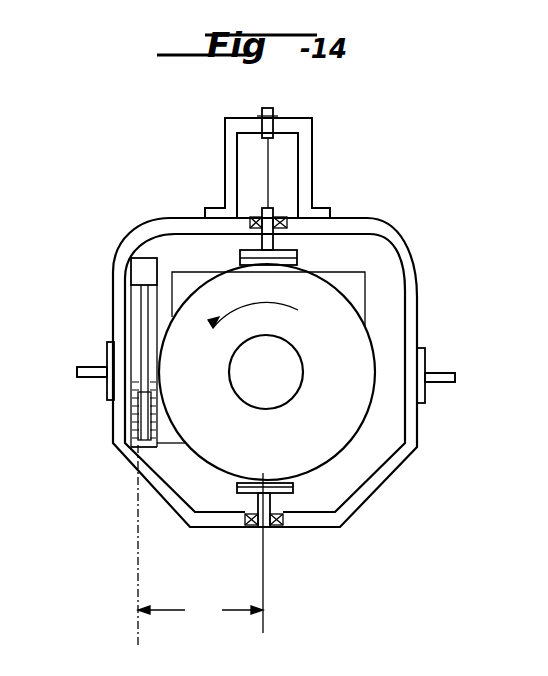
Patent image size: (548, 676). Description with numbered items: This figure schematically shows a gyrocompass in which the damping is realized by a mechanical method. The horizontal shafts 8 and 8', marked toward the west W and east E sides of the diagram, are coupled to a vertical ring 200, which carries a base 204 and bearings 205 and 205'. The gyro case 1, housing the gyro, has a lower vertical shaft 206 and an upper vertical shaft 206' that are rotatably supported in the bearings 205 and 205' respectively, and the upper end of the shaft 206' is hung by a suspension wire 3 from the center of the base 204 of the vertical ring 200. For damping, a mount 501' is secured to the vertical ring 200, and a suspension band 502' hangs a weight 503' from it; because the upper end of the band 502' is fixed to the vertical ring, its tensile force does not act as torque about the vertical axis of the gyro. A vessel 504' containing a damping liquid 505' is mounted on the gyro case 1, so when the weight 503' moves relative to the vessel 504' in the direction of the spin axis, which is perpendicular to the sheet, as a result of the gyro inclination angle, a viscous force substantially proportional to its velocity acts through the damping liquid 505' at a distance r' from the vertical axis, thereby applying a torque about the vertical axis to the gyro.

The gyro case 1 is at (358, 337).
The suspension wire 3 is at (268, 153).
The shaft 8 is at (447, 387).
The shaft 8' is at (94, 357).
The vertical ring 200 is at (387, 478).
The base 204 is at (312, 118).
The bearing 205 is at (296, 546).
The bearing 205' is at (343, 222).
The vertical shaft 206 is at (242, 527).
The vertical shaft 206' is at (321, 190).
The mount 501' is at (147, 312).
The suspension band 502' is at (100, 351).
The weight 503' is at (98, 449).
The vessel 504' is at (112, 505).
The damping liquid 505' is at (96, 426).
The west direction W is at (63, 362).
The east direction E is at (456, 368).
The distance r' is at (200, 546).